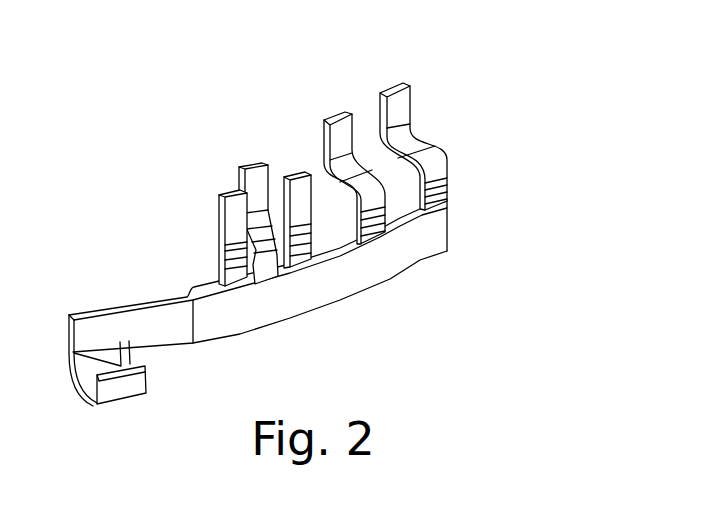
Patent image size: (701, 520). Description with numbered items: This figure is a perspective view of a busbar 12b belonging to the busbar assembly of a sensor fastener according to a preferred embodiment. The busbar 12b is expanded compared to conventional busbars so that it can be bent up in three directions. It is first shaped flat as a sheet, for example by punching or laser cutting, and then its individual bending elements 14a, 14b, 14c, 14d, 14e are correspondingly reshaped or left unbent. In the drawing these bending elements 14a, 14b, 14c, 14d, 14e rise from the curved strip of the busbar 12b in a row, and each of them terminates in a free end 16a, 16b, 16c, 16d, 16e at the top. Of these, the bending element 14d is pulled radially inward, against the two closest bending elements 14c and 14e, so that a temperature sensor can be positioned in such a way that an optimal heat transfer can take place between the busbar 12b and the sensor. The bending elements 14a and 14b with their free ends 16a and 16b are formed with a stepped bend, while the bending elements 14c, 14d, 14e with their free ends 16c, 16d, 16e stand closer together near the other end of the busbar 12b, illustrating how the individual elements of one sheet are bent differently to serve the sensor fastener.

The busbar 12b is at (227, 327).
The bending element 14a is at (433, 162).
The bending element 14b is at (368, 198).
The bending element 14c is at (300, 247).
The bending element 14d is at (260, 237).
The bending element 14e is at (227, 260).
The free end 16a is at (441, 105).
The free end 16b is at (402, 174).
The free end 16c is at (304, 234).
The free end 16d is at (199, 184).
The free end 16e is at (172, 208).